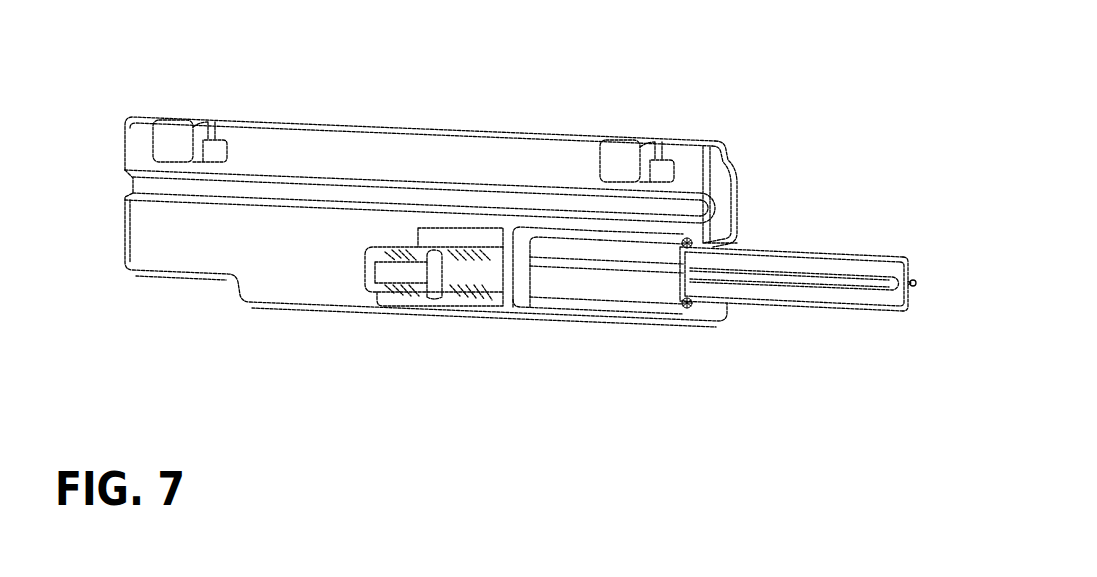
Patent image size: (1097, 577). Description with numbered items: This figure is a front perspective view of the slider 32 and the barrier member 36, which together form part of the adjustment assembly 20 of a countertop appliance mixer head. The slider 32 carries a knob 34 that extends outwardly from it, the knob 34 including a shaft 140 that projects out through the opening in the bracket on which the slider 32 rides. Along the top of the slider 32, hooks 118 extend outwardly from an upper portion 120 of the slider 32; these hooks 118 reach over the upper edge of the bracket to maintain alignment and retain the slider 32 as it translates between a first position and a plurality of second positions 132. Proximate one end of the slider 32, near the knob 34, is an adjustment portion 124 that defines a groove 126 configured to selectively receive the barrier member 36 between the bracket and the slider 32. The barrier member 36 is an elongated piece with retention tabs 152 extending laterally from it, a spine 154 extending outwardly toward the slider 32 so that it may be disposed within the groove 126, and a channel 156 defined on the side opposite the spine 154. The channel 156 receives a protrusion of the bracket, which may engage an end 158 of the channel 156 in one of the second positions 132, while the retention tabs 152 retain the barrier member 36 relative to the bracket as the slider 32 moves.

The adjustment assembly 20 is at (148, 68).
The slider 32 is at (550, 137).
The knob 34 is at (387, 250).
The barrier member 36 is at (865, 256).
The hooks 118 is at (182, 118).
The upper portion 120 is at (310, 120).
The adjustment portion 124 is at (643, 245).
The groove 126 is at (585, 264).
The second positions 132 is at (747, 200).
The shaft 140 is at (455, 276).
The retention tabs 152 is at (727, 243).
The spine 154 is at (917, 284).
The channel 156 is at (864, 284).
The end 158 is at (908, 272).